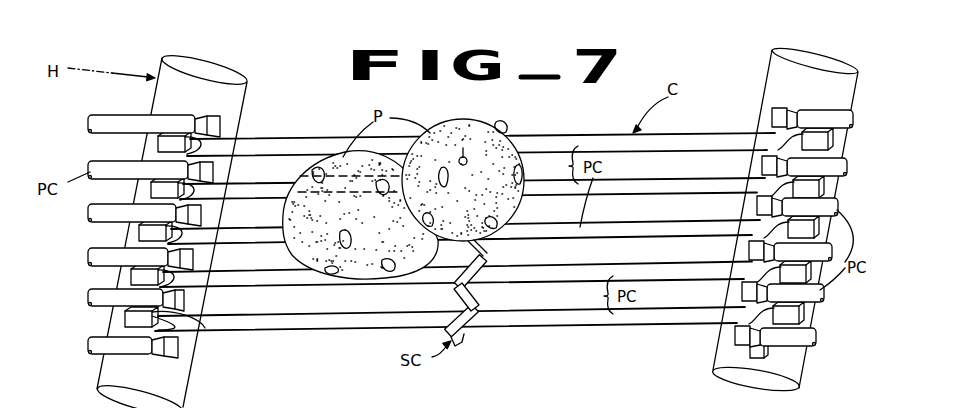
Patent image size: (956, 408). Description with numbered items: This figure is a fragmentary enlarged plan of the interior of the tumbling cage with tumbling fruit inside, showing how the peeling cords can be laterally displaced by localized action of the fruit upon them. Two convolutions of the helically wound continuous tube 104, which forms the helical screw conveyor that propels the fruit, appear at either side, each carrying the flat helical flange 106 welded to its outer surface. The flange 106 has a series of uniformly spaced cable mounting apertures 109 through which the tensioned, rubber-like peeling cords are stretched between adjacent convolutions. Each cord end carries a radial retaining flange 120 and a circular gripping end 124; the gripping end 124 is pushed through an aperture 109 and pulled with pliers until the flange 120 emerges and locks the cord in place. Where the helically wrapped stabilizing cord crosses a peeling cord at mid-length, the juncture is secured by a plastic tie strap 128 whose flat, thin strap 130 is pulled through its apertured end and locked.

The helically wound continuous tube 104 is at (205, 68).
The helical flange 106 is at (193, 113).
The cable mounting apertures 109 is at (185, 158).
The radial retaining flange 120 is at (157, 327).
The gripping end 124 is at (221, 128).
The plastic tie strap 128 is at (475, 307).
The strap 130 is at (455, 308).